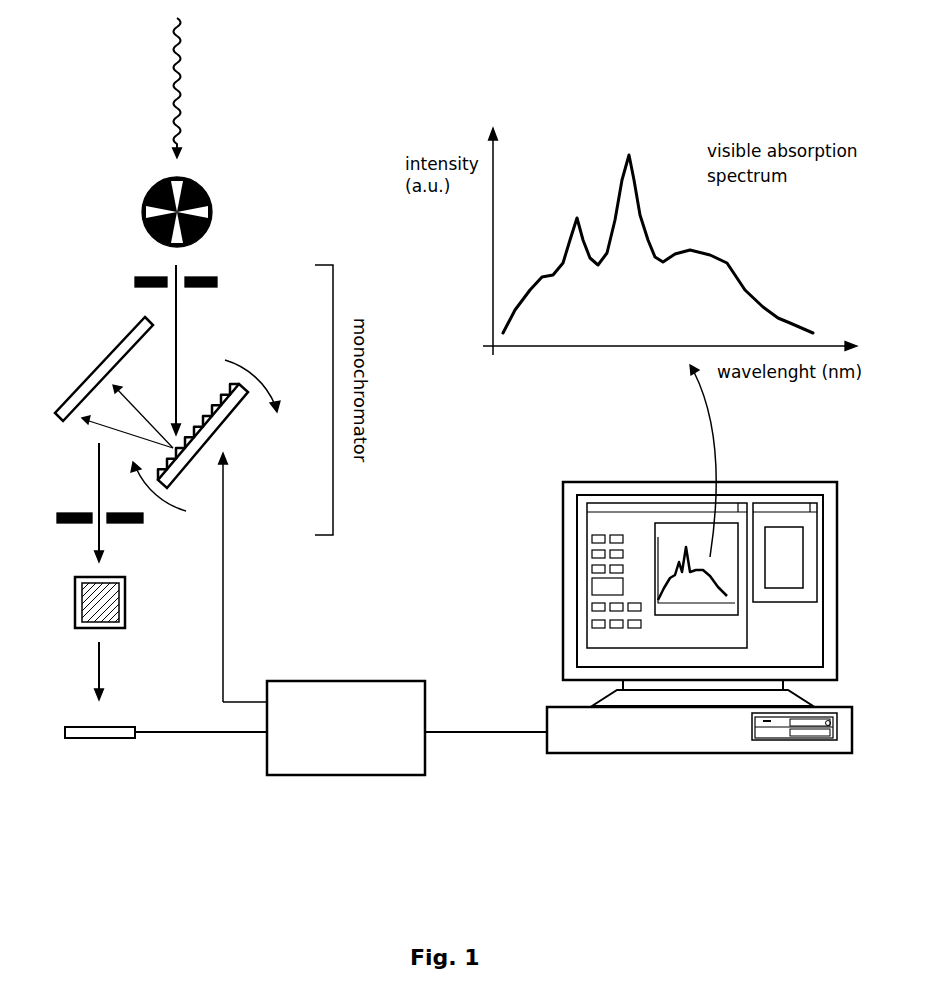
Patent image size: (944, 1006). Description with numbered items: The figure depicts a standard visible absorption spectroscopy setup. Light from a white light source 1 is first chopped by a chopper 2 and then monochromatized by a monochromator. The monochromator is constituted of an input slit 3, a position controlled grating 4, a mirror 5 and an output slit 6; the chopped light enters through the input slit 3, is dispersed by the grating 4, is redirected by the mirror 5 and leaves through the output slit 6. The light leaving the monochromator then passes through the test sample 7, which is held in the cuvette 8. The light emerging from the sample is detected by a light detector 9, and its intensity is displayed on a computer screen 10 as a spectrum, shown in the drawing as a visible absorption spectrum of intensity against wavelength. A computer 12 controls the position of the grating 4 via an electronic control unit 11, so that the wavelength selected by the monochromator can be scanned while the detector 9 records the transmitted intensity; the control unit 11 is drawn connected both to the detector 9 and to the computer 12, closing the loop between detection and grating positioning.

The white light source 1 is at (228, 88).
The chopper 2 is at (212, 212).
The input slit 3 is at (209, 350).
The position controlled grating 4 is at (183, 435).
The mirror 5 is at (96, 369).
The output slit 6 is at (79, 502).
The test sample 7 is at (100, 602).
The cuvette 8 is at (70, 602).
The light detector 9 is at (166, 752).
The computer screen 10 is at (682, 594).
The electronic control unit 11 is at (384, 614).
The computer 12 is at (699, 730).